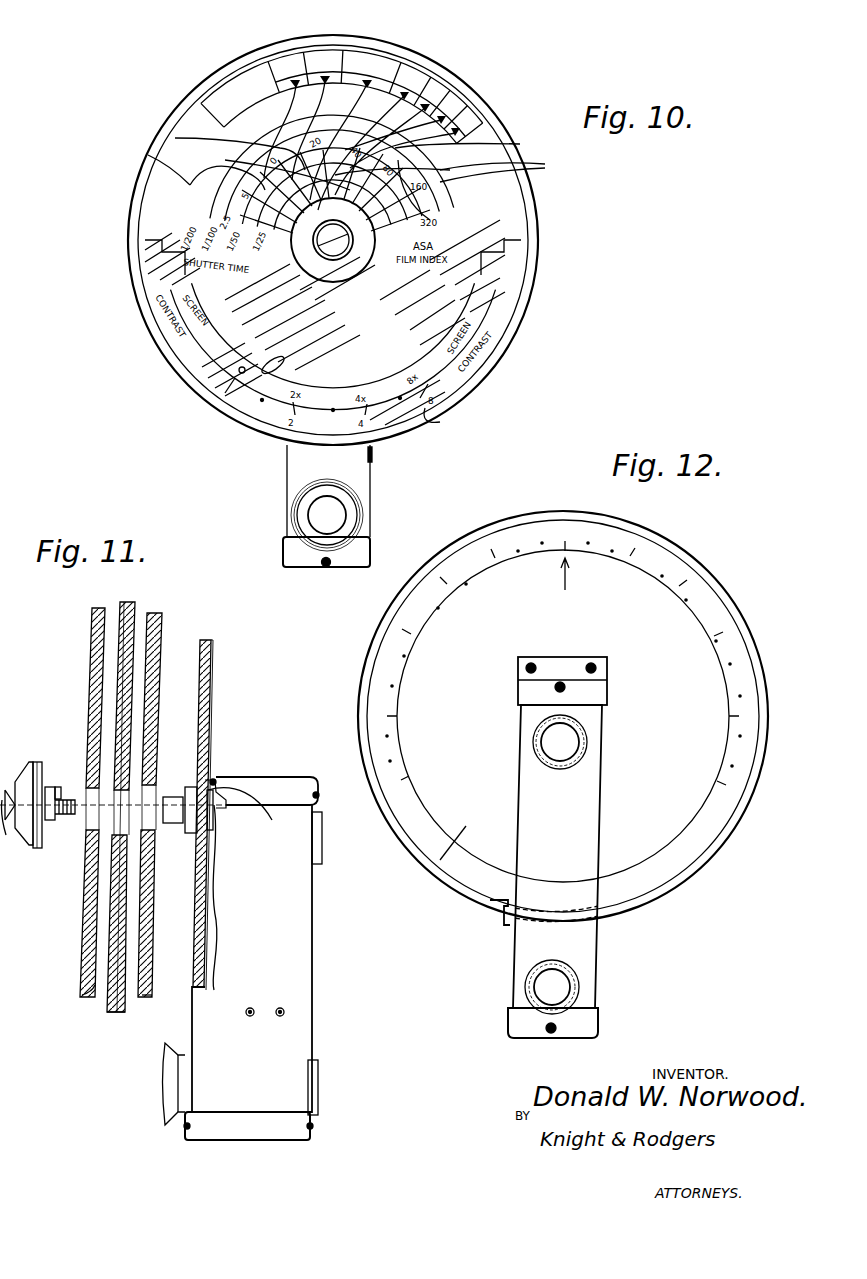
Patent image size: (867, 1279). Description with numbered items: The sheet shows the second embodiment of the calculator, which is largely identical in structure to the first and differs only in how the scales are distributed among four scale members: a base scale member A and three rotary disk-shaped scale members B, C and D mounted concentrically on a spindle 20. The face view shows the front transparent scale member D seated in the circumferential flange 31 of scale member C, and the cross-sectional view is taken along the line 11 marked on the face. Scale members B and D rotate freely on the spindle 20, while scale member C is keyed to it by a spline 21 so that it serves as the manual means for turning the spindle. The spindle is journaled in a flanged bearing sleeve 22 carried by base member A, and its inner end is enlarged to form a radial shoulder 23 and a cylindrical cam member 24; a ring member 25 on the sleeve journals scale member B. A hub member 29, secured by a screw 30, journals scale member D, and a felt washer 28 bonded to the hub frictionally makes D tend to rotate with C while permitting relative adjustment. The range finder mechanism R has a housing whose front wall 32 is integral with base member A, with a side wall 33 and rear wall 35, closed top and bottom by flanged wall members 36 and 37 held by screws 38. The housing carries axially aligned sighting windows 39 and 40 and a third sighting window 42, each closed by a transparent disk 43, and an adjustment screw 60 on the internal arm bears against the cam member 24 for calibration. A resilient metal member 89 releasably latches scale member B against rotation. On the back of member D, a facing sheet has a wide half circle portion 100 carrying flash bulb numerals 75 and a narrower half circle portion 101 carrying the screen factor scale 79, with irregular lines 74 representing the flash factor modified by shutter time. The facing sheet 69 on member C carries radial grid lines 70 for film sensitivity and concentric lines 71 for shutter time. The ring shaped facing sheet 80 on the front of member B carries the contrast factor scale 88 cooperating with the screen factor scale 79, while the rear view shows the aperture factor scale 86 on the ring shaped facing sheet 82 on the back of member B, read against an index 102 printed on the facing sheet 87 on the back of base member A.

In FIG. 10, the section line 11— 11 is at (340, 8).
In FIG. 11, the spindle 20 is at (174, 826).
In FIG. 11, the spline 21 is at (60, 787).
In FIG. 11, the flanged bearing sleeve 22 is at (218, 855).
In FIG. 11, the radial shoulder 23 is at (215, 818).
In FIG. 11, the cylindrical cam member 24 is at (226, 790).
In FIG. 11, the ring member 25 is at (183, 794).
In FIG. 11, the felt washer 28 is at (38, 762).
In FIG. 10, the hub member 29 is at (360, 262).
In FIG. 11, the hub member 29 is at (22, 772).
In FIG. 10, the screw 30 is at (326, 258).
In FIG. 11, the screw 30 is at (12, 826).
In FIG. 10, the circumferential flange 31 is at (530, 213).
In FIG. 11, the circumferential flange 31 is at (106, 1012).
In FIG. 10, the front wall 32 is at (328, 491).
In FIG. 11, the front wall 32 is at (197, 908).
In FIG. 11, the side wall 33 is at (252, 958).
In FIG. 12, the rear wall 35 is at (557, 856).
In FIG. 11, the flanged wall member 36 is at (290, 780).
In FIG. 12, the flanged wall member 36 is at (600, 690).
In FIG. 10, the second flanged wall member 37 is at (360, 558).
In FIG. 11, the second flanged wall member 37 is at (250, 1140).
In FIG. 12, the second flanged wall member 37 is at (512, 1025).
In FIG. 10, the screws 38 is at (322, 563).
In FIG. 11, the screws 38 is at (216, 772).
In FIG. 12, the screws 38 is at (533, 664).
In FIG. 10, the sighting window 39 is at (297, 506).
In FIG. 11, the sighting window 39 is at (165, 1080).
In FIG. 11, the sighting window 40 is at (318, 1080).
In FIG. 12, the sighting window 40 is at (578, 983).
In FIG. 11, the third sighting window 42 is at (322, 836).
In FIG. 12, the third sighting window 42 is at (585, 740).
In FIG. 10, the transparent disk 43 is at (340, 517).
In FIG. 12, the transparent disk 43 is at (568, 752).
In FIG. 11, the adjustment screw 60 is at (251, 807).
In FIG. 11, the facing sheet 69 is at (115, 917).
In FIG. 10, the radial grid lines 70 is at (262, 142).
In FIG. 10, the concentric lines 71 is at (503, 168).
In FIG. 10, the irregular lines 74 is at (520, 144).
In FIG. 10, the numerals 75 is at (420, 100).
In FIG. 10, the screen factor scale 79 is at (315, 395).
In FIG. 11, the ring shaped facing sheet 80 is at (148, 1000).
In FIG. 11, the ring shaped facing sheet 82 is at (150, 990).
In FIG. 12, the ring shaped facing sheet 82 is at (680, 855).
In FIG. 12, the aperture factor scale 86 is at (642, 556).
In FIG. 11, the facing sheet 87 is at (212, 698).
In FIG. 12, the facing sheet 87 is at (439, 864).
In FIG. 10, the contrast factor scale 88 is at (440, 422).
In FIG. 10, the resilient metal member 89 is at (375, 455).
In FIG. 12, the resilient metal member 89 is at (493, 907).
In FIG. 10, the half circle portion 100 is at (186, 164).
In FIG. 11, the half circle portion 100 is at (92, 665).
In FIG. 10, the half circle portion 101 is at (228, 398).
In FIG. 11, the half circle portion 101 is at (90, 1005).
In FIG. 12, the reference mark or index 102 is at (562, 578).
In FIG. 11, the base scale member A is at (207, 640).
In FIG. 12, the base scale member A is at (703, 628).
In FIG. 11, the scale member B is at (158, 613).
In FIG. 12, the scale member B is at (520, 527).
In FIG. 10, the scale member C is at (258, 50).
In FIG. 11, the scale member C is at (130, 603).
In FIG. 12, the scale member C is at (608, 518).
In FIG. 10, the scale member D is at (180, 110).
In FIG. 11, the scale member D is at (92, 606).
In FIG. 10, the range finder mechanism R is at (372, 485).
In FIG. 11, the range finder mechanism R is at (312, 965).
In FIG. 12, the range finder mechanism R is at (598, 955).